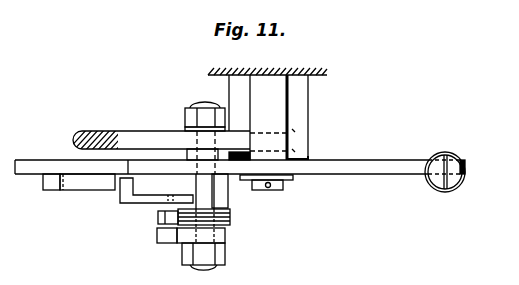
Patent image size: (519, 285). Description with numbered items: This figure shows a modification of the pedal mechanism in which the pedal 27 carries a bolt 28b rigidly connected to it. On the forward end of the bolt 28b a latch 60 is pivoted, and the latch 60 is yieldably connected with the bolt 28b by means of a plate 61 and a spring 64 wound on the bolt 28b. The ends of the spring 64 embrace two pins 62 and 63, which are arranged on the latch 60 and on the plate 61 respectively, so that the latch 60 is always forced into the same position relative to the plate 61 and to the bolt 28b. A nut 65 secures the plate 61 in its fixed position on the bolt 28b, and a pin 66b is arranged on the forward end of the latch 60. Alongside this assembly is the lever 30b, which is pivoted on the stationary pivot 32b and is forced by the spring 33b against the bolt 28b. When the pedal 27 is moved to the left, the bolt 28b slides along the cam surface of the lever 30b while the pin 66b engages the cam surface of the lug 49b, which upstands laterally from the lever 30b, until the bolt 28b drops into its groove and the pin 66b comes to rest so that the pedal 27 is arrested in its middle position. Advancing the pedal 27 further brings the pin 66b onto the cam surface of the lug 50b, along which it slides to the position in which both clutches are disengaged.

The pedal 27 is at (101, 131).
The bolt 28b is at (212, 170).
The lever 30b is at (36, 167).
The stationary pivot 32b is at (280, 105).
The spring 33b is at (452, 153).
The lug 49b is at (77, 187).
The lug 50b is at (50, 190).
The latch 60 is at (135, 202).
The plate 61 is at (170, 238).
The pin 62 is at (158, 218).
The pin 63 is at (166, 230).
The spring 64 is at (230, 219).
The nut 65 is at (222, 254).
The pin 66b is at (104, 190).